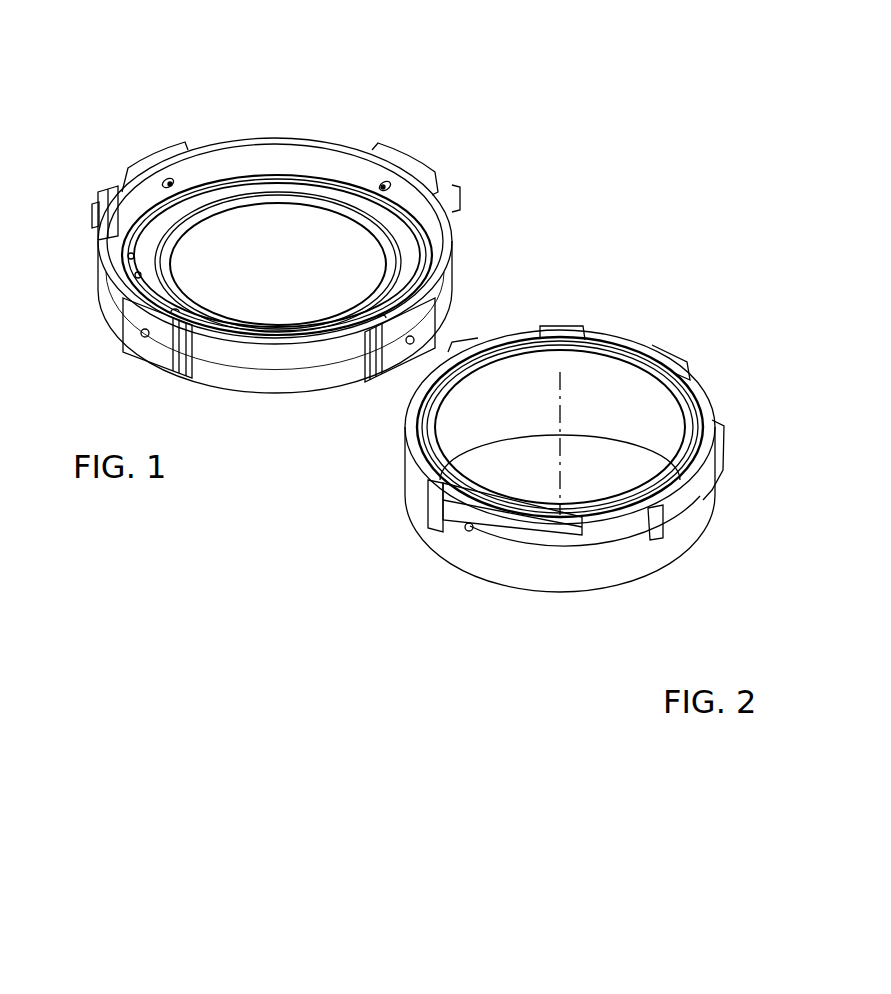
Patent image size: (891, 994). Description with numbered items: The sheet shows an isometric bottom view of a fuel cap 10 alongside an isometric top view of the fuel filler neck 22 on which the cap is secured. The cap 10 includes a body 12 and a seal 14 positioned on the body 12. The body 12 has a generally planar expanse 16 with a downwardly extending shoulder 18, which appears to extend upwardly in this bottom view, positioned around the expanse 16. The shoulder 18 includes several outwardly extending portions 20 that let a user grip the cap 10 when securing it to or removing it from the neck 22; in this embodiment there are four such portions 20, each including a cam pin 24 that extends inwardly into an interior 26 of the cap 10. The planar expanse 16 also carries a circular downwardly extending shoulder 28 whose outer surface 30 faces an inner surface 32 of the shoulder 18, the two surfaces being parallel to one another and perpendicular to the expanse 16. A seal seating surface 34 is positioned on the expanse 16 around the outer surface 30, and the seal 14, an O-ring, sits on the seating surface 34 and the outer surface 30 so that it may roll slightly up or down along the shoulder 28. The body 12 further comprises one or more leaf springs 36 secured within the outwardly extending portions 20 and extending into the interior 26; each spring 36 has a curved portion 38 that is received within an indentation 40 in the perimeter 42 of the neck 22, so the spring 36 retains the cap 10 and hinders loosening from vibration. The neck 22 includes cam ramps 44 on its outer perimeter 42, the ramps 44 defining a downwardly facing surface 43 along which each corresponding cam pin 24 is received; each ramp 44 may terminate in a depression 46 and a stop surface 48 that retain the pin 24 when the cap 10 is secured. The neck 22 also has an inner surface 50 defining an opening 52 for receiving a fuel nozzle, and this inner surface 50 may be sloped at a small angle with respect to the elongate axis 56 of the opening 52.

In FIG. 1, the fuel cap 10 is at (332, 241).
In FIG. 1, the body 12 is at (387, 153).
In FIG. 1, the seal 14 is at (418, 252).
In FIG. 1, the generally planar expanse 16 is at (285, 292).
In FIG. 1, the downwardly extending shoulder 18 is at (437, 297).
In FIG. 1, the outwardly extending portions 20 is at (160, 347).
In FIG. 2, the fuel filler neck 22 is at (614, 470).
In FIG. 1, the cam pin 24 is at (384, 190).
In FIG. 1, the interior 26 is at (272, 264).
In FIG. 1, the downwardly extending shoulder 28 is at (130, 270).
In FIG. 1, the outer surface 30 is at (127, 287).
In FIG. 1, the inner surface 32 is at (277, 153).
In FIG. 1, the seal seating surface 34 is at (418, 265).
In FIG. 1, the leaf spring 36 is at (122, 186).
In FIG. 1, the curved portion 38 is at (103, 243).
In FIG. 2, the indentation 40 is at (690, 383).
In FIG. 2, the perimeter 42 is at (715, 430).
In FIG. 2, the downwardly facing surface 43 is at (517, 540).
In FIG. 2, the cam ramp 44 is at (550, 549).
In FIG. 2, the depression 46 is at (467, 533).
In FIG. 2, the stop surface 48 is at (466, 530).
In FIG. 2, the inner surface 50 is at (600, 398).
In FIG. 2, the opening 52 is at (640, 410).
In FIG. 2, the elongate axis 56 is at (548, 345).